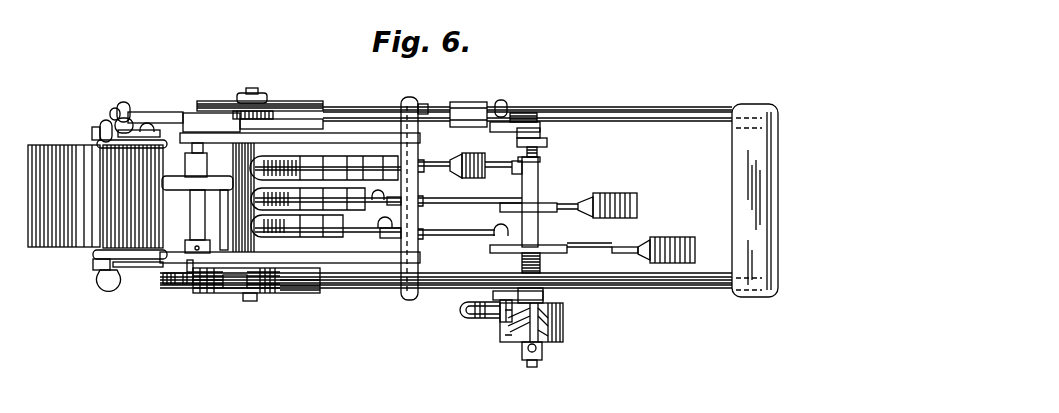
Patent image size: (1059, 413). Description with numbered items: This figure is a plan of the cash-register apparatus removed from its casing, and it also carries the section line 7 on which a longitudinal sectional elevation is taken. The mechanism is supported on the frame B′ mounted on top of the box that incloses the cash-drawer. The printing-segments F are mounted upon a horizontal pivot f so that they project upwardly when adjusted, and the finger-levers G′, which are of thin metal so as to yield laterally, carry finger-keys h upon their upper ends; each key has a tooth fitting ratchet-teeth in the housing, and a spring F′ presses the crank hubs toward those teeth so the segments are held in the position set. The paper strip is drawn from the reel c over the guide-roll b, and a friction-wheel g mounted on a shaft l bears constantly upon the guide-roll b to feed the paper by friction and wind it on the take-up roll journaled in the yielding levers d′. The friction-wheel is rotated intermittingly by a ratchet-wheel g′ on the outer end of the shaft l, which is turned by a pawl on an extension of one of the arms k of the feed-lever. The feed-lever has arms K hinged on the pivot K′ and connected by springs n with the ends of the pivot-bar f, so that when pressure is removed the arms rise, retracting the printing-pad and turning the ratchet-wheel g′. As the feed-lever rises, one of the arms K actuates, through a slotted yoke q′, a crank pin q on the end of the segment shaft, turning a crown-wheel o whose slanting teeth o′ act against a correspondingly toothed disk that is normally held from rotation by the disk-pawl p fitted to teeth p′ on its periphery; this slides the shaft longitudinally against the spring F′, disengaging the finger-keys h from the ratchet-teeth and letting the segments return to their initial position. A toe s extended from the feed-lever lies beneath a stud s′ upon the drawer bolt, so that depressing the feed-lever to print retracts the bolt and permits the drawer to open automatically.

The reel c is at (95, 207).
The frame B′ is at (93, 133).
The stud s′ is at (128, 103).
The yielding levers d′ is at (134, 130).
The projection or toe s is at (176, 112).
The section line 7 is at (172, 145).
The pivot K′ is at (252, 83).
The feed-lever arms K is at (607, 113).
The pivot f is at (405, 99).
The springs n is at (422, 108).
The guide-roll b is at (228, 217).
The friction-wheel g is at (197, 181).
The shaft l is at (197, 225).
The ratchet-wheel g′ is at (168, 281).
The arms k is at (270, 294).
The printing-segments F is at (316, 235).
The crank pin q is at (501, 100).
The slotted yoke q′ is at (508, 114).
The finger-keys h is at (556, 218).
The finger-levers G′ is at (528, 238).
The spring F′ is at (541, 262).
The crown-wheel o is at (563, 335).
The slanting teeth o′ is at (518, 338).
The disk-pawl p is at (490, 318).
The teeth p′ is at (505, 323).